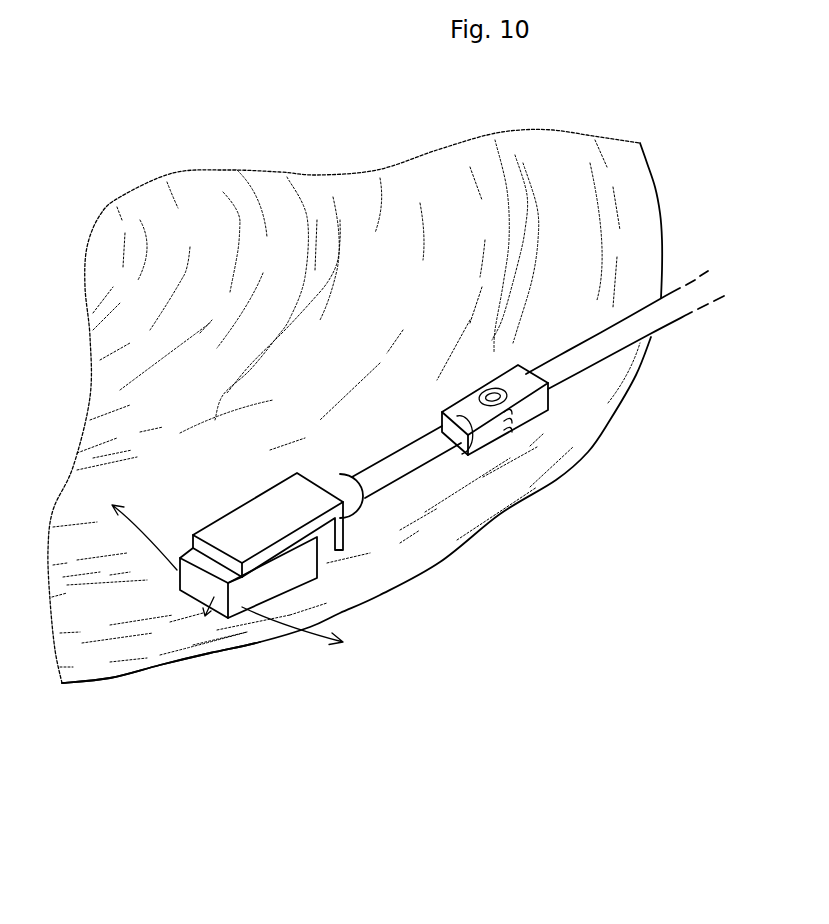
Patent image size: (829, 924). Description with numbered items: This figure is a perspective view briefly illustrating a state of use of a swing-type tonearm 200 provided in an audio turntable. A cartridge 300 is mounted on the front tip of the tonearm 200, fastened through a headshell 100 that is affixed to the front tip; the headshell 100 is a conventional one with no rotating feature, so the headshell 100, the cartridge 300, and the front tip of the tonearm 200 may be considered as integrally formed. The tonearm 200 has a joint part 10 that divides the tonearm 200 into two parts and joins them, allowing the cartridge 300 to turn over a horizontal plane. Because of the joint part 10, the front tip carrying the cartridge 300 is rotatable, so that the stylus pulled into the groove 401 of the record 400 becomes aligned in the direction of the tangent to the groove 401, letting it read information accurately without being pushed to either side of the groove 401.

The joint part 10 is at (475, 376).
The headshell 100 is at (285, 502).
The tonearm 200 is at (570, 362).
The cartridge 300 is at (297, 573).
The record 400 is at (374, 170).
The groove 401 is at (162, 620).